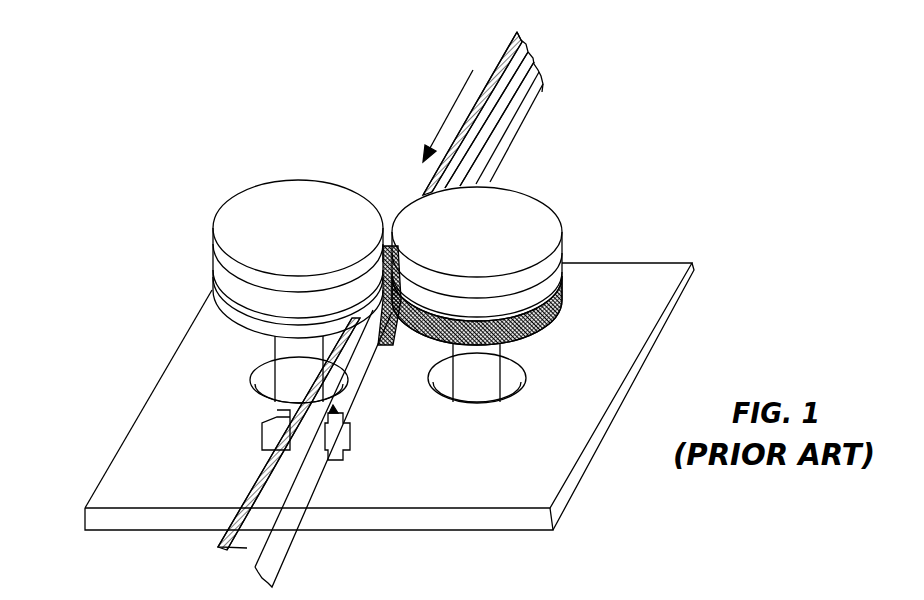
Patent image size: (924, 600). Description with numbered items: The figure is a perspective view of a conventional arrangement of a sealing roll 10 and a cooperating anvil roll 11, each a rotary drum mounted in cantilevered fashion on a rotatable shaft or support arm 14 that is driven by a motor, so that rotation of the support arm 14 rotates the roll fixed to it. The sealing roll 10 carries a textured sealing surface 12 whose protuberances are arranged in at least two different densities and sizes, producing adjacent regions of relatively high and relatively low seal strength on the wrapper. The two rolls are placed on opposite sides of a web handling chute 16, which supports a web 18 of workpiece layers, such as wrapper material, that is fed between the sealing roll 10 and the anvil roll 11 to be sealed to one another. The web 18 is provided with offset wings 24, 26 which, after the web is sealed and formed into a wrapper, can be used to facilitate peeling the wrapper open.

The sealing roll 10 is at (553, 298).
The anvil roll 11 is at (228, 281).
The textured sealing surface 12 is at (574, 316).
The rotatable shaft or support arm 14 is at (285, 352).
The web handling chute 16 is at (523, 123).
The web of workpiece layers 18 is at (473, 127).
The offset wing 24 is at (475, 118).
The offset wing 26 is at (458, 126).